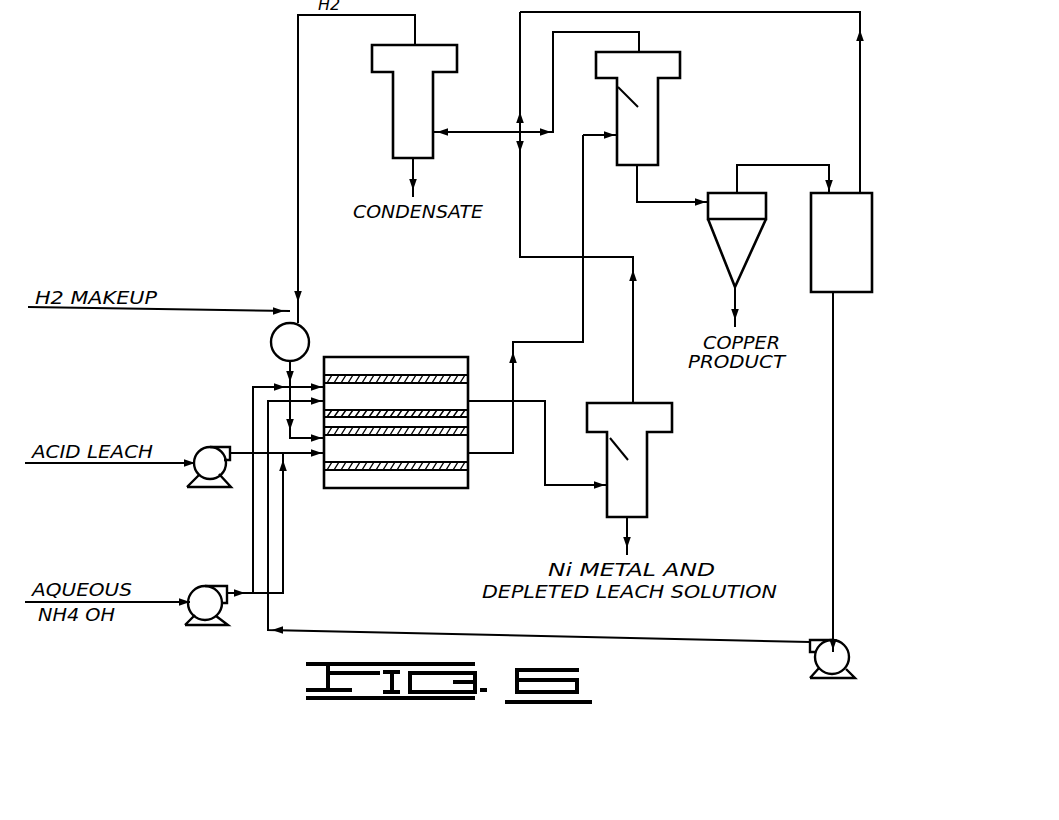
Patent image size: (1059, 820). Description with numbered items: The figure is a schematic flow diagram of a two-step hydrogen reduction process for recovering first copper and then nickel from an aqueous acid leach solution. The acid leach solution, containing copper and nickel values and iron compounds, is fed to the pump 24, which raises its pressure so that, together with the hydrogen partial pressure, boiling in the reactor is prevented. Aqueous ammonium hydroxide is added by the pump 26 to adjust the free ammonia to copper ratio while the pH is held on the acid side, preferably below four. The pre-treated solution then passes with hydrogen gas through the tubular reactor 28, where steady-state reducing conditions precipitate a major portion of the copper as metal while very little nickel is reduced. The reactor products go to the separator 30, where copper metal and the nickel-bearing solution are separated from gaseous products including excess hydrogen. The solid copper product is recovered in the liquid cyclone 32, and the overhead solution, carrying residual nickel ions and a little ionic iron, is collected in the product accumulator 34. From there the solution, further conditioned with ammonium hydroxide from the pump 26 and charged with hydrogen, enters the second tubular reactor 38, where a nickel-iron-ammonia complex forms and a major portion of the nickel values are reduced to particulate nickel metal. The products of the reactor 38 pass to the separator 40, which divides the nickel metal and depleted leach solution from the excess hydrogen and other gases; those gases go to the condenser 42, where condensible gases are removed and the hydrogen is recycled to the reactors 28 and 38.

The pump 24 is at (296, 335).
The pump 26 is at (208, 590).
The tubular reactor 28 is at (396, 424).
The separator 30 is at (648, 127).
The liquid cyclone 32 is at (732, 247).
The product accumulator 34 is at (823, 260).
The second tubular reactor 38 is at (424, 380).
The separator 40 is at (638, 488).
The condenser 42 is at (403, 118).